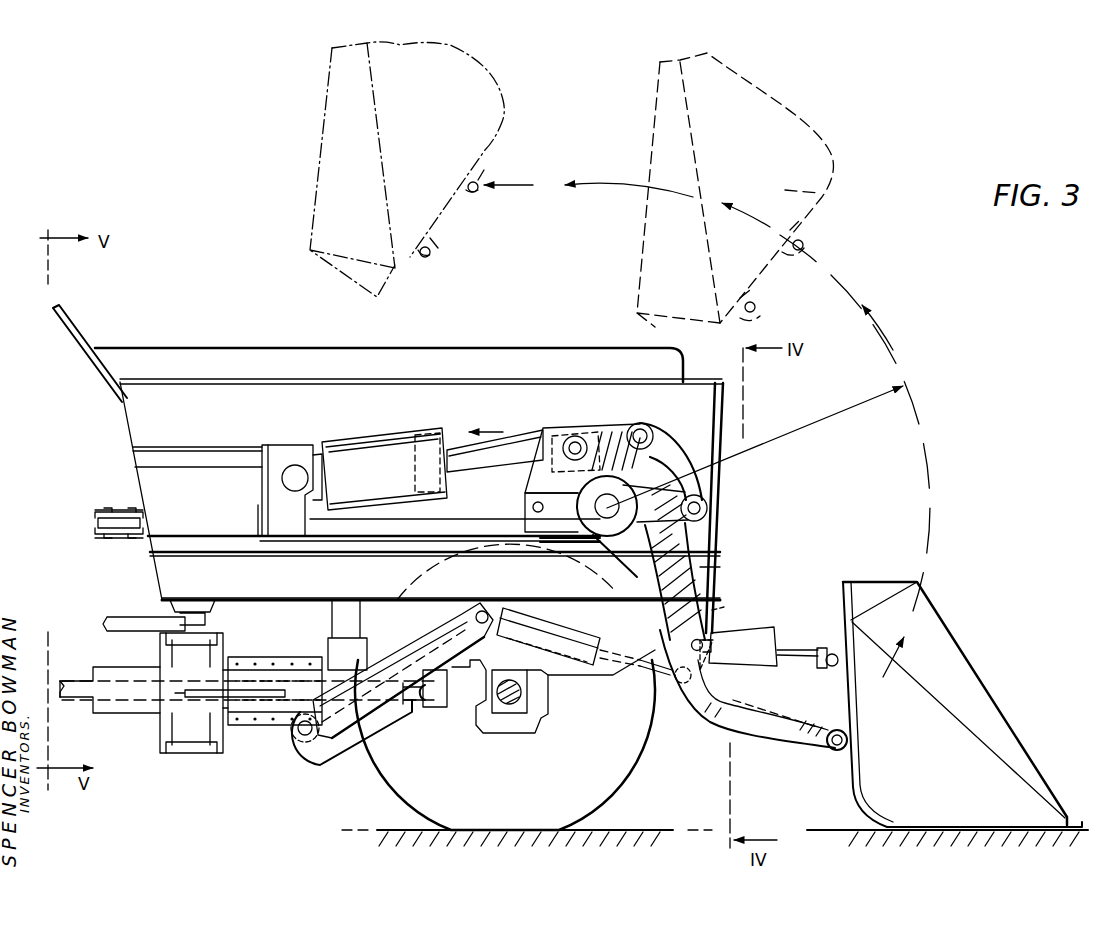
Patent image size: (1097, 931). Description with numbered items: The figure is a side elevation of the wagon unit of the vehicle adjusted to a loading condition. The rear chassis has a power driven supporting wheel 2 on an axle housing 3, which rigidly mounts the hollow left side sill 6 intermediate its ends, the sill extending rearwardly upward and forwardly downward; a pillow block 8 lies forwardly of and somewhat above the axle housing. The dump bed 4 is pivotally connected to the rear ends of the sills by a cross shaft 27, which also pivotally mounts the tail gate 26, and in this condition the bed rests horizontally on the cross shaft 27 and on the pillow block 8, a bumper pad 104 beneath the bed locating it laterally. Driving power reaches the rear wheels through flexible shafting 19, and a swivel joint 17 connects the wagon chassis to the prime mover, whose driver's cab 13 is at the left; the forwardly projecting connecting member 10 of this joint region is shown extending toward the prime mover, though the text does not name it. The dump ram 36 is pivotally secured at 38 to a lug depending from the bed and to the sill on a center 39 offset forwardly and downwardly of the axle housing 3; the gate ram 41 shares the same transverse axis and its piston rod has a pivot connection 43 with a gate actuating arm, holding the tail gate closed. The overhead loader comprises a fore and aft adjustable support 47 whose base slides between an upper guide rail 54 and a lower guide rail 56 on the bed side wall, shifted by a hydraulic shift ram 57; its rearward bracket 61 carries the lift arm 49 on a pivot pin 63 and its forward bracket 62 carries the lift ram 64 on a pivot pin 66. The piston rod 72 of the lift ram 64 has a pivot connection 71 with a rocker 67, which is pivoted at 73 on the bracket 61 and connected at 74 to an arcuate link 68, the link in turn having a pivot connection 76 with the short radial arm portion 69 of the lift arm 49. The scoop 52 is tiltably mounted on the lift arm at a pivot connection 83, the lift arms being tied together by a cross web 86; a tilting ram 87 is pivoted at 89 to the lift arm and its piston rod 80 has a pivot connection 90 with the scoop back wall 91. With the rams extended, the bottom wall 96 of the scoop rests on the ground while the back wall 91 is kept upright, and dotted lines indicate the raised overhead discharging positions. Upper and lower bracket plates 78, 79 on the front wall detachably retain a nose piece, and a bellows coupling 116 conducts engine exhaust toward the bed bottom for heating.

The right power driven supporting wheel 2 is at (602, 764).
The axle housing 3 is at (500, 726).
The dump bed 4 is at (246, 420).
The left side sill 6 is at (310, 772).
The pillow block 8 is at (324, 640).
The shaft 10 is at (126, 676).
The driver's cab 13 is at (78, 696).
The swivel joint 17 is at (162, 742).
The flexible shafting 19 is at (434, 710).
The tail gate 26 is at (718, 576).
The cross shaft 27 is at (718, 612).
The hydraulic dump ram 36 is at (422, 648).
The pivotal securing point of dump ram cylinder 38 is at (484, 612).
The pivot center of dump ram piston rod 39 is at (292, 740).
The tail gate hydraulic ram 41 is at (560, 628).
The pivot connection 43 is at (658, 686).
The fore and aft adjustable support 47 is at (432, 526).
The left lift arm 49 is at (712, 720).
The scoop 52 is at (924, 769).
The upper guide rail 54 is at (198, 456).
The lower guide rail 56 is at (180, 545).
The hydraulic shift ram 57 is at (260, 510).
The rearward bracket 61 is at (570, 532).
The forward bracket 62 is at (268, 448).
The pivot pin 63 is at (618, 528).
The hydraulic lift ram 64 is at (381, 452).
The pivot pin 66 is at (301, 466).
The rocker 67 is at (600, 434).
The arcuate link 68 is at (680, 445).
The radial arm portion of lift arm 69 is at (702, 484).
The pivot connection 71 is at (572, 436).
The piston rod of lift ram 72 is at (520, 448).
The pivot connection 73 is at (534, 504).
The pivot connection 74 is at (652, 430).
The pivot connection 76 is at (706, 508).
The upper bracket plate 78 is at (124, 512).
The lower bracket plate 79 is at (122, 540).
The piston rod of tilting ram 80 is at (804, 650).
The pivot connection 83 is at (838, 750).
The cross web 86 is at (787, 696).
The tilting ram 87 is at (744, 657).
The pivot connection 89 is at (712, 634).
The pivot connection 90 is at (832, 666).
The back wall of scoop 91 is at (862, 668).
The bottom wall of scoop 96 is at (980, 827).
The bumper pad 104 is at (330, 604).
The bellows coupling 116 is at (214, 612).